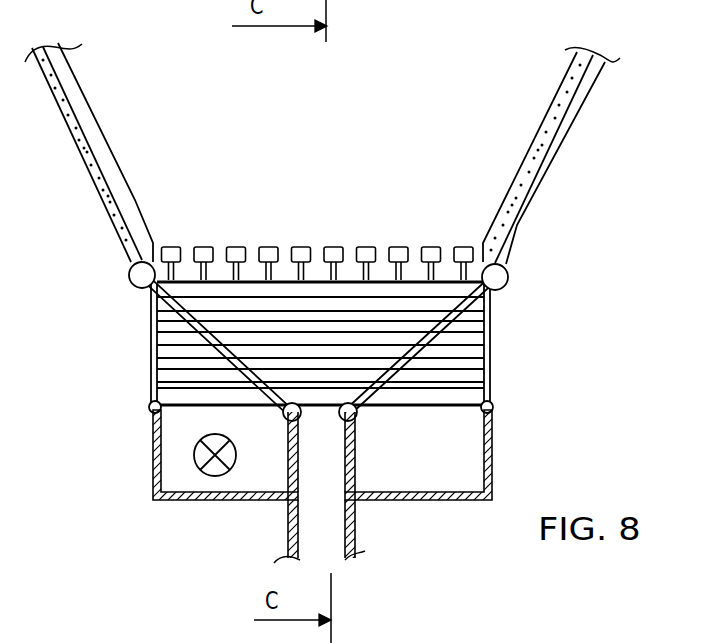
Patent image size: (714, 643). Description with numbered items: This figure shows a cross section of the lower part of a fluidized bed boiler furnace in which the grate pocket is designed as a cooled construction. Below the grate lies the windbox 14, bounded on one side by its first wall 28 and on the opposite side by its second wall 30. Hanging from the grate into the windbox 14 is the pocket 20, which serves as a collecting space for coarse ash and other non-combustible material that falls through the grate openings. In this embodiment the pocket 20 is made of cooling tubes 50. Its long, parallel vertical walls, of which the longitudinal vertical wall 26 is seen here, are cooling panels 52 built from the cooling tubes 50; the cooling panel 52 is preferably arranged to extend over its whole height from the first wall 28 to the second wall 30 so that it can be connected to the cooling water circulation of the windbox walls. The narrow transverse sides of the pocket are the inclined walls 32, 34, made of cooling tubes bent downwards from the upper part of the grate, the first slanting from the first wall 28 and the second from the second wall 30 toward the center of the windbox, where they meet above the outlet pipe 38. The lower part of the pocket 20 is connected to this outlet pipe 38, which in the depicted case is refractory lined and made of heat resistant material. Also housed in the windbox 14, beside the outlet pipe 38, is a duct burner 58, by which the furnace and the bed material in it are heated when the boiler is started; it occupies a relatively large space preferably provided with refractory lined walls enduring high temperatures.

The windbox 14 is at (183, 428).
The pocket 20 is at (353, 327).
The longitudinal vertical wall 26 is at (319, 305).
The first wall of the windbox 28 is at (153, 348).
The second wall of the windbox 30 is at (489, 354).
The transverse inclined wall 32 is at (163, 320).
The transverse inclined wall 34 is at (450, 325).
The outlet pipe 38 is at (346, 455).
The cooling tube 50 is at (230, 318).
The cooling panel 52 is at (153, 377).
The duct burner 58 is at (213, 467).